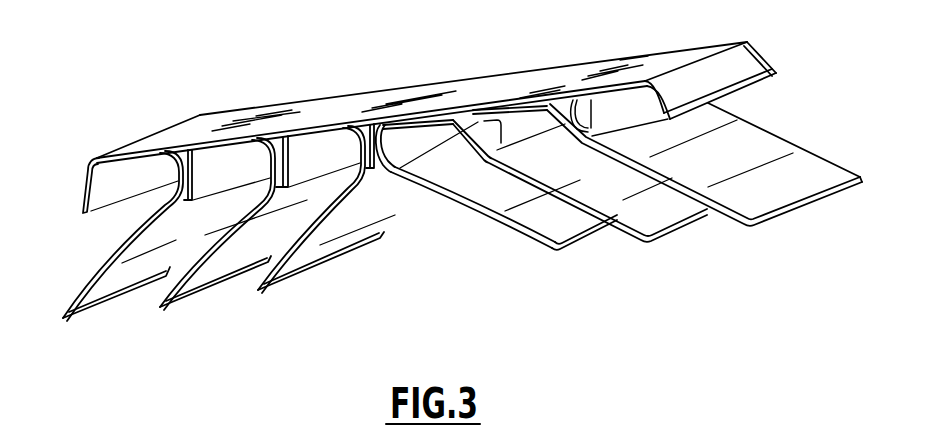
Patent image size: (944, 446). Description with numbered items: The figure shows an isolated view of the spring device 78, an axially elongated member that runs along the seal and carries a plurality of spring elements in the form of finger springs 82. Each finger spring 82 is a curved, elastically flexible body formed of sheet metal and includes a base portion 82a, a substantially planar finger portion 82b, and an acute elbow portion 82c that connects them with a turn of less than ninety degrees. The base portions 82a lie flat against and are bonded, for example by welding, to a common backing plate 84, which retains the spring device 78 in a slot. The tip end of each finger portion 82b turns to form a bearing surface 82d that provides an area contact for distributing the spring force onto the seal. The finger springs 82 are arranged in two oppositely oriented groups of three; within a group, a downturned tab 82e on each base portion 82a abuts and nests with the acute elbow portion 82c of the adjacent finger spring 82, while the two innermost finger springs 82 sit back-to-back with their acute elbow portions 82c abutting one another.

The spring device 78 is at (124, 119).
The finger springs 82 is at (145, 301).
The base portion 82a is at (543, 90).
The finger portion 82b is at (538, 207).
The acute elbow portion 82c is at (501, 134).
The bearing surface 82d is at (553, 253).
The downturned tab 82e is at (561, 125).
The backing plate 84 is at (605, 74).